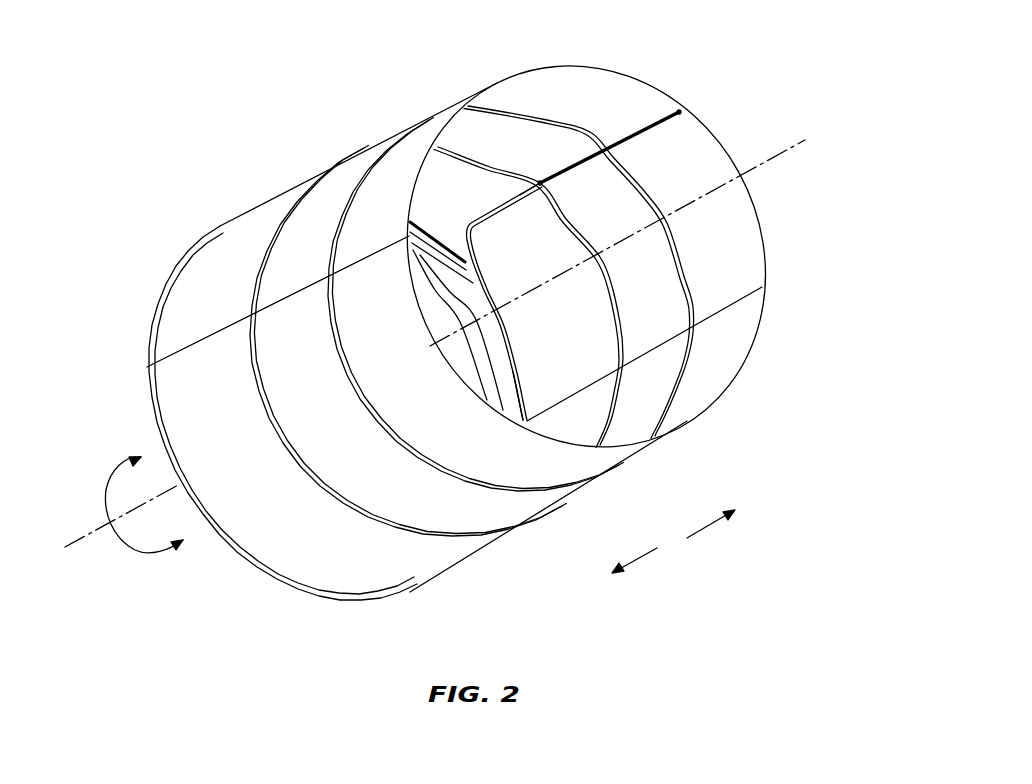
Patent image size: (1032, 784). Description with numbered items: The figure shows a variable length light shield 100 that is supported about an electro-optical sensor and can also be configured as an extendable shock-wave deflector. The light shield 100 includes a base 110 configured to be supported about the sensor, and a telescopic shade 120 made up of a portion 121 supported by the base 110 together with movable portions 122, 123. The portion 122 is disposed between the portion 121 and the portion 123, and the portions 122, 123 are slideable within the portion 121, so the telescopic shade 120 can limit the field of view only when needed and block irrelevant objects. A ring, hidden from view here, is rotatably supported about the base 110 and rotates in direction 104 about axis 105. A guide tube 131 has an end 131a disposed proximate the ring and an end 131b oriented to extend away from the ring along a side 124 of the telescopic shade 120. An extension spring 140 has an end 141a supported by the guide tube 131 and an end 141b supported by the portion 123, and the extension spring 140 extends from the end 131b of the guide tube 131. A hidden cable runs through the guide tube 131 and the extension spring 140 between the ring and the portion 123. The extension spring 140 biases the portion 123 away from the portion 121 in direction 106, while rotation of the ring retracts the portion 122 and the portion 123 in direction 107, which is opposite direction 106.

The variable length light shield 100 is at (286, 55).
The direction 104 is at (141, 553).
The axis 105 is at (90, 536).
The direction 106 is at (714, 524).
The direction 107 is at (641, 553).
The base 110 is at (146, 384).
The telescopic shade 120 is at (316, 150).
The portion 121 is at (425, 562).
The portion 122 is at (518, 507).
The portion 123 is at (583, 463).
The side 124 is at (568, 303).
The guide tube 131 is at (493, 207).
The end 131a is at (527, 420).
The end 131b is at (539, 193).
The extension spring 140 is at (653, 128).
The end 141a is at (540, 178).
The end 141b is at (681, 111).